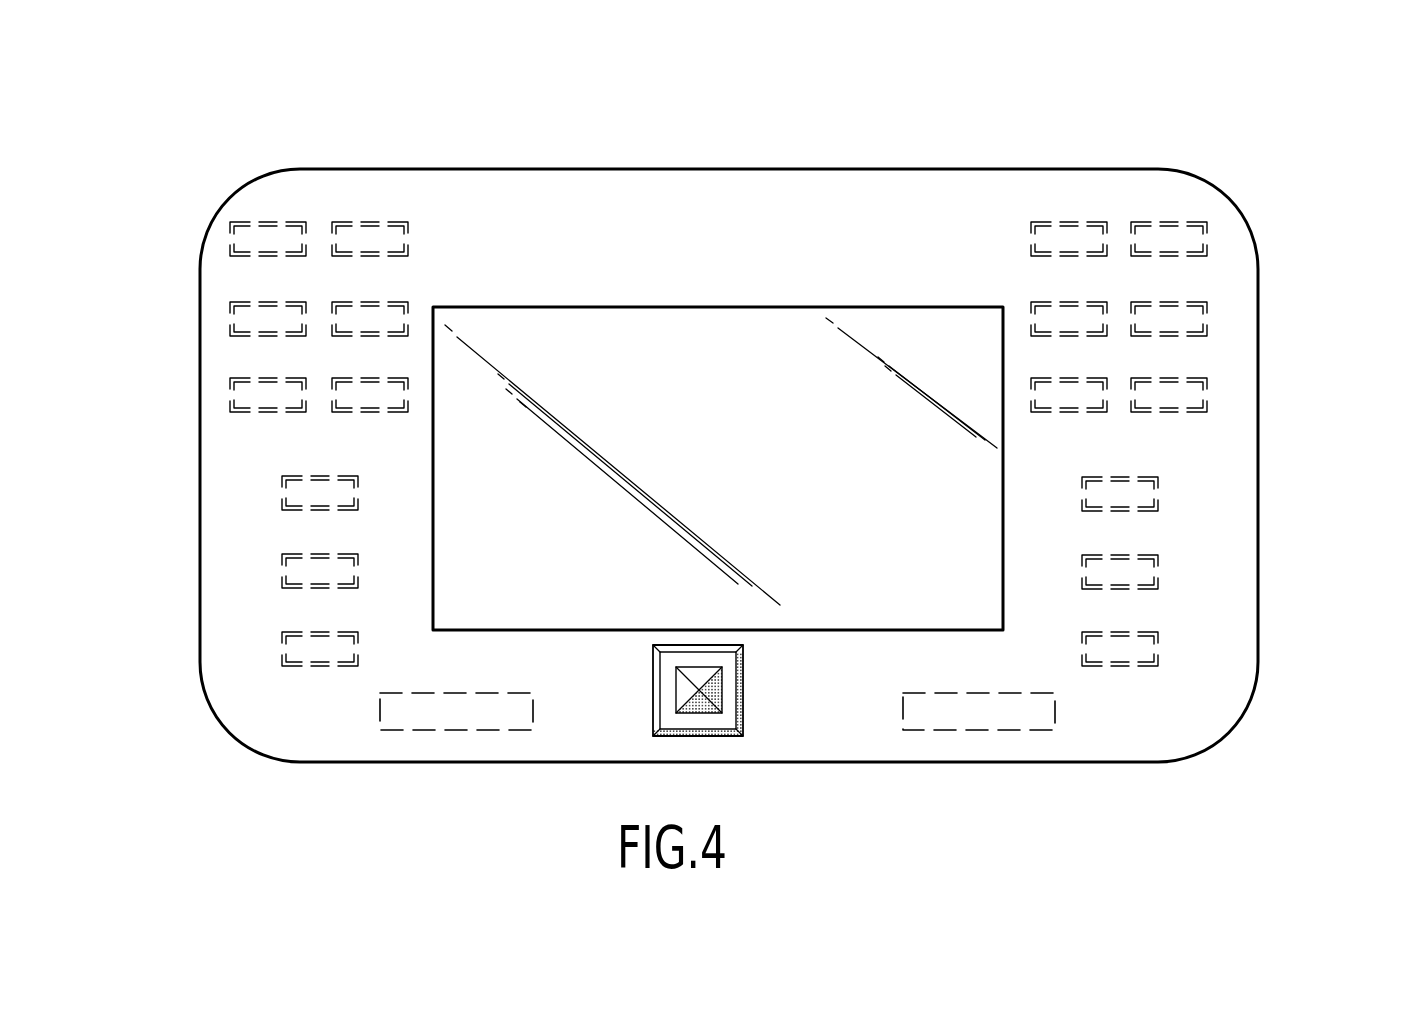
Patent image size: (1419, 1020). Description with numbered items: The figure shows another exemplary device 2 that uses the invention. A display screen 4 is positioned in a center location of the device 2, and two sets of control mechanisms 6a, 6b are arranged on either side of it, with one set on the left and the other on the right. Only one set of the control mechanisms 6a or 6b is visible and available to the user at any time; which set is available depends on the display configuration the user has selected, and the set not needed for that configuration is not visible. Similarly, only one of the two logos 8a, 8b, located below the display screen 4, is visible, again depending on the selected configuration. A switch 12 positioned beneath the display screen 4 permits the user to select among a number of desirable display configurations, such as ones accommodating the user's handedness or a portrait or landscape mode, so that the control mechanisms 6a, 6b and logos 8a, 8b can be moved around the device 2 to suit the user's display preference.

The device 2 is at (845, 142).
The display screen 4 is at (765, 308).
The control mechanisms 6a is at (215, 266).
The control mechanisms 6b is at (1220, 285).
The logo 8a is at (448, 727).
The logo 8b is at (995, 730).
The switch 12 is at (744, 683).